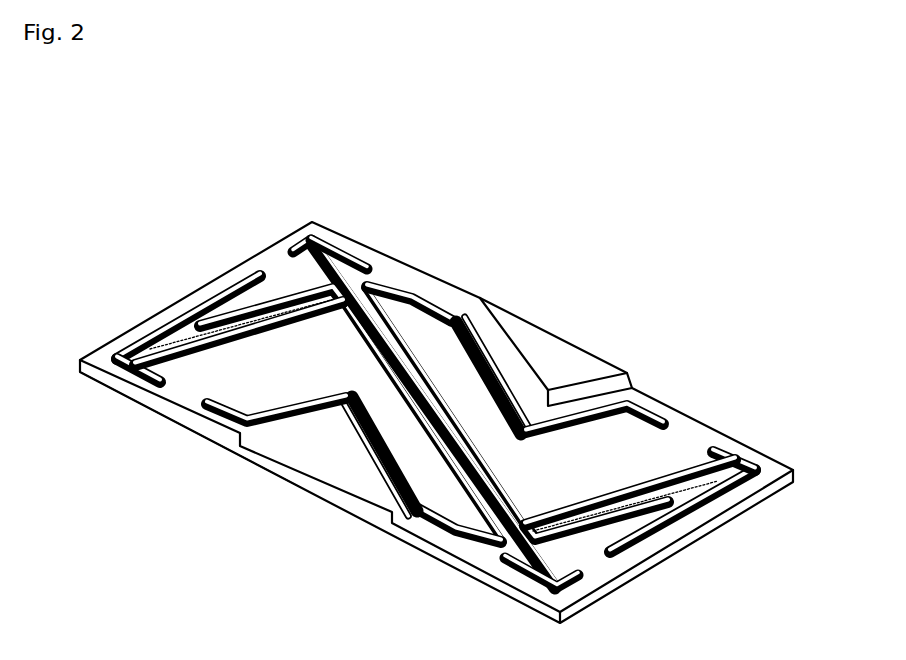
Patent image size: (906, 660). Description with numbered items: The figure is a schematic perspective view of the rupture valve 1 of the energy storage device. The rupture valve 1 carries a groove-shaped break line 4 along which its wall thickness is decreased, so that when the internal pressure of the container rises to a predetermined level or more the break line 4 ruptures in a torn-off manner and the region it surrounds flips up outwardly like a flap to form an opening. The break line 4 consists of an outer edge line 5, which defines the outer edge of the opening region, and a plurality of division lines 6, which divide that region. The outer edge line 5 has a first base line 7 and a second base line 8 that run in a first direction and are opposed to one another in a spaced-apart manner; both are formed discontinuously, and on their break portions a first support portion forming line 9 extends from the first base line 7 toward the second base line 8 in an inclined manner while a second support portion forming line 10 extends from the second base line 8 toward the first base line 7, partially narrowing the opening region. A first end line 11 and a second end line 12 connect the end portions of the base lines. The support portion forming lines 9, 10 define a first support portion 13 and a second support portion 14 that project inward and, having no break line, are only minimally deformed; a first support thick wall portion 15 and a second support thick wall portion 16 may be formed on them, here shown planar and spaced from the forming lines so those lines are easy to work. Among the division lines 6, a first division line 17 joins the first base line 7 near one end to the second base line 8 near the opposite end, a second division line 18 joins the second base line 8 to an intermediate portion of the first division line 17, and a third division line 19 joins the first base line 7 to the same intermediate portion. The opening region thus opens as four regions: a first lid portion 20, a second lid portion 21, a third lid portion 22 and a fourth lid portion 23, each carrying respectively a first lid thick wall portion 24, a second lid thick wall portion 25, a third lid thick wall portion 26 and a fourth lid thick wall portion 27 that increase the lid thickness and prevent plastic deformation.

The rupture valve 1 is at (652, 247).
The break line 4 is at (352, 252).
The outer edge line 5 is at (221, 290).
The division lines 6 is at (196, 334).
The first base line 7 is at (447, 352).
The second base line 8 is at (395, 520).
The first support portion forming line 9 is at (512, 392).
The second support portion forming line 10 is at (240, 440).
The first end line 11 is at (155, 336).
The second end line 12 is at (688, 507).
The first support portion 13 is at (560, 369).
The second support portion 14 is at (275, 400).
The first support thick wall portion 15 is at (587, 367).
The second support thick wall portion 16 is at (337, 458).
The first division line 17 is at (385, 338).
The second division line 18 is at (352, 258).
The third division line 19 is at (662, 502).
The first lid portion 20 is at (428, 318).
The second lid portion 21 is at (278, 354).
The third lid portion 22 is at (287, 294).
The fourth lid portion 23 is at (590, 542).
The first lid thick wall portion 24 is at (463, 393).
The second lid thick wall portion 25 is at (322, 438).
The third lid thick wall portion 26 is at (253, 300).
The fourth lid thick wall portion 27 is at (655, 535).